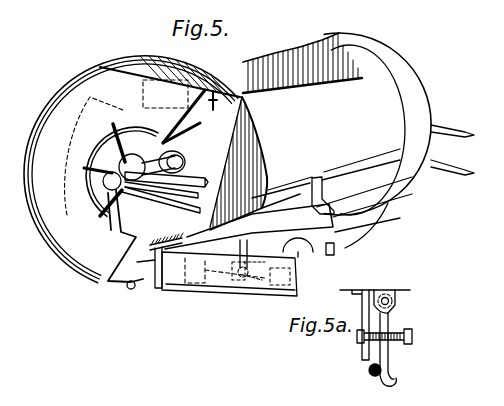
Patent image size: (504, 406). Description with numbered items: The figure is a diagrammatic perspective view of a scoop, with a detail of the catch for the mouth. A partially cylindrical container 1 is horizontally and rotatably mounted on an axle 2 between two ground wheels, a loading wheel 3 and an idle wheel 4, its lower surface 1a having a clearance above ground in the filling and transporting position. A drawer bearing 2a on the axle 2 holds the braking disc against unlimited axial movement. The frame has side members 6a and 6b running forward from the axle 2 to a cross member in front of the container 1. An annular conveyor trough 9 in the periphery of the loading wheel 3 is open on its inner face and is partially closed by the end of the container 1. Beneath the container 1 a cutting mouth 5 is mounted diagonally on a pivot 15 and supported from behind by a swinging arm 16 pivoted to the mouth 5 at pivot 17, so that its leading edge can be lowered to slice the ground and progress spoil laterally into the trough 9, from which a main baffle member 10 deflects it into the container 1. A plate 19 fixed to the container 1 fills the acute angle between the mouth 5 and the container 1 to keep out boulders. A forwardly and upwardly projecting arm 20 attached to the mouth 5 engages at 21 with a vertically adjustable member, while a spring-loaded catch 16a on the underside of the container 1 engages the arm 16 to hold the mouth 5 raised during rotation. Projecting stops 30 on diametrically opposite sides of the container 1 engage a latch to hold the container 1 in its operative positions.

In FIG. 5, the container 1 is at (248, 60).
In FIG. 5, the lower surface 1a is at (282, 211).
In FIG. 5, the axle 2 is at (151, 161).
In FIG. 5, the drawer bearing 2a is at (104, 180).
In FIG. 5, the loading wheel 3 is at (118, 66).
In FIG. 5, the idle wheel 4 is at (396, 50).
In FIG. 5, the cutting mouth 5 is at (195, 289).
In FIG. 5, the side member 6a is at (160, 194).
In FIG. 5, the side member 6b is at (470, 140).
In FIG. 5, the annular conveyor trough 9 is at (200, 125).
In FIG. 5, the main baffle member 10 is at (214, 104).
In FIG. 5, the pivot 15 is at (172, 290).
In FIG. 5, the swinging arm 16 is at (231, 287).
In FIG. 5A, the swinging arm 16 is at (369, 370).
In FIG. 5, the catch 16a is at (248, 290).
In FIG. 5A, the catch 16a is at (394, 356).
In FIG. 5, the pivot 17 is at (246, 279).
In FIG. 5, the plate 19 is at (163, 286).
In FIG. 5, the arm 20 is at (300, 254).
In FIG. 5, the engagement point 21 is at (336, 255).
In FIG. 5, the projecting stops 30 is at (320, 176).